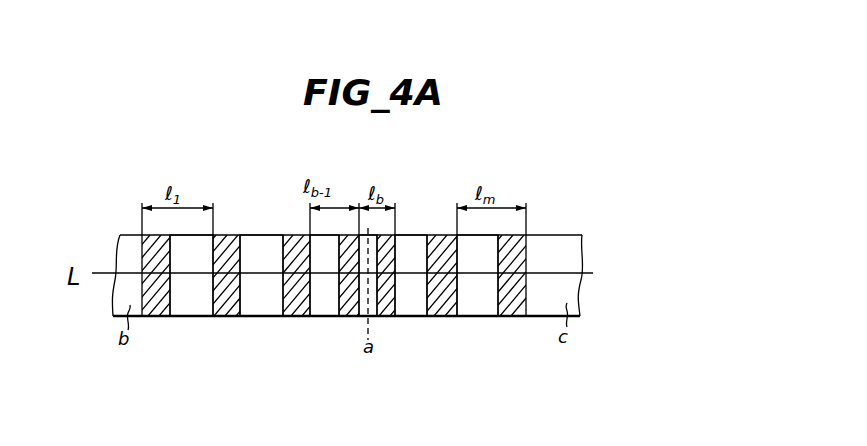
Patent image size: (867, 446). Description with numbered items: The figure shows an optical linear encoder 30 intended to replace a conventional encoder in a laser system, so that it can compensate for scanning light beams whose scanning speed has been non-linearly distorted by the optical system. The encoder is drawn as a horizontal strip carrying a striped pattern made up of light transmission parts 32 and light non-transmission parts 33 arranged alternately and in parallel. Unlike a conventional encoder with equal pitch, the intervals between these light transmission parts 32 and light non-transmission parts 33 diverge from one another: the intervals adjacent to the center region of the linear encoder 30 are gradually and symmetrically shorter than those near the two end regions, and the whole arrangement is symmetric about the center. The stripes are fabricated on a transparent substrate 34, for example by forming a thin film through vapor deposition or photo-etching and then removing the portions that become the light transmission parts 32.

The optical linear encoder 30 is at (391, 289).
The light transmission part 32 is at (255, 303).
The light non-transmission part 33 is at (455, 303).
The transparent substrate 34 is at (563, 234).